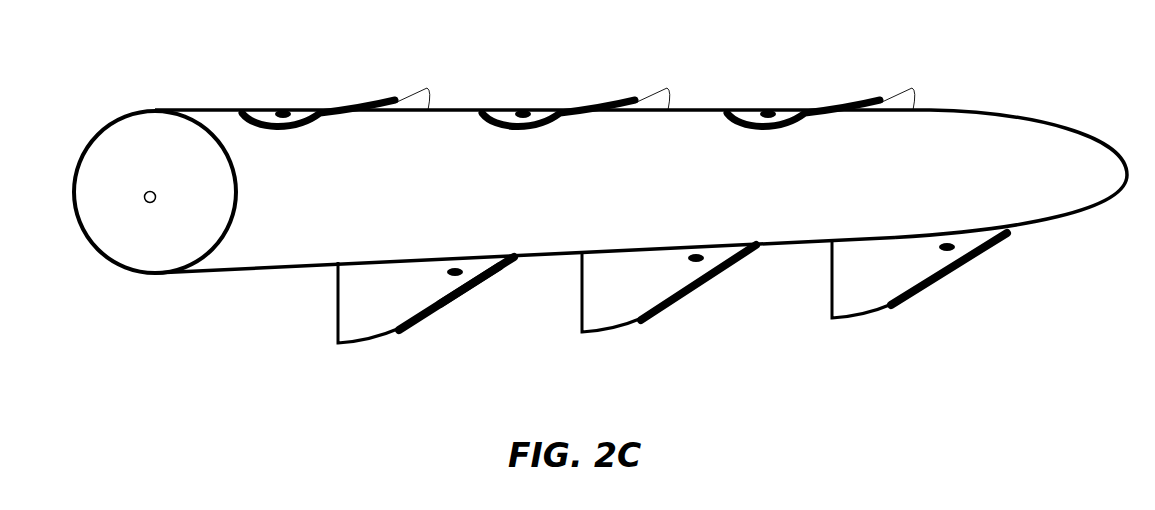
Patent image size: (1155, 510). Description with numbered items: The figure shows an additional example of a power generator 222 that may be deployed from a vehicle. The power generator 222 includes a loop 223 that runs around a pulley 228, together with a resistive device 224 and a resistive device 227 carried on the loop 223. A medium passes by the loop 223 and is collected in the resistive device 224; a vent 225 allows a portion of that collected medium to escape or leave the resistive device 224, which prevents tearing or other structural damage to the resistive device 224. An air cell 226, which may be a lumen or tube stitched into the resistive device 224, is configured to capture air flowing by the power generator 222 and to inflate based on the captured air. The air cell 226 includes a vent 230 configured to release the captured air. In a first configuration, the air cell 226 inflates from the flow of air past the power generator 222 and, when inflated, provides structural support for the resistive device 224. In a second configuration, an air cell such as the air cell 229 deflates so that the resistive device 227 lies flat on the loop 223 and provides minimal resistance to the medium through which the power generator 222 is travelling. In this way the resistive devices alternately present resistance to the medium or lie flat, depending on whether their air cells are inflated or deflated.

The power generator 222 is at (600, 258).
The loop 223 is at (460, 106).
The resistive device 224 is at (347, 351).
The vent 225 is at (465, 297).
The air cell 226 is at (423, 328).
The resistive device 227 is at (676, 82).
The pulley 228 is at (244, 199).
The air cell 229 is at (589, 104).
The vent 230 is at (515, 274).